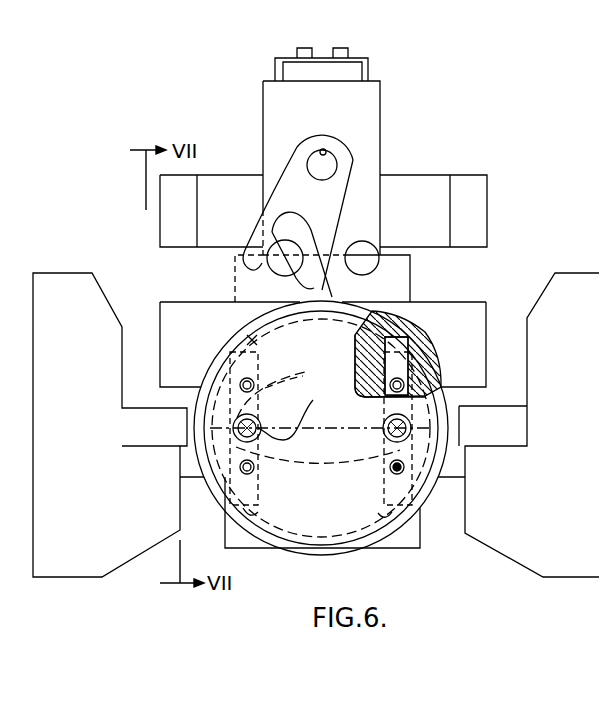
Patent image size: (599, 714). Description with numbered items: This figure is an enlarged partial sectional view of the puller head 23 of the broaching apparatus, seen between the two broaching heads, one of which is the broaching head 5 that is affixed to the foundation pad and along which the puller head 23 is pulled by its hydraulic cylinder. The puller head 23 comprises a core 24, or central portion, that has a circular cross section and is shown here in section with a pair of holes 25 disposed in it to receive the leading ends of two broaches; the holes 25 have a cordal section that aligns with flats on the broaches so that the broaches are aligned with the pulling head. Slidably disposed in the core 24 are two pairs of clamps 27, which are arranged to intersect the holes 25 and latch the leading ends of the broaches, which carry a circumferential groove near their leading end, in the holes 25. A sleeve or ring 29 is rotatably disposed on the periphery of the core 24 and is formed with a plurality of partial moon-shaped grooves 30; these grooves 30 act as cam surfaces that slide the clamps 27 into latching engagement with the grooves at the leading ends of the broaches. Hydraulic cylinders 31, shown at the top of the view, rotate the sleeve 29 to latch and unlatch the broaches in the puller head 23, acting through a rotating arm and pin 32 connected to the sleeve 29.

The broaching head 5 is at (70, 283).
The puller head 23 is at (242, 330).
The core 24 is at (343, 340).
The holes 25 is at (380, 433).
The clamps 27 is at (390, 378).
The sleeve 29 is at (223, 500).
The partial moon-shaped grooves 30 is at (263, 345).
The hydraulic cylinders 31 is at (237, 176).
The rotating arm and pin 32 is at (355, 184).